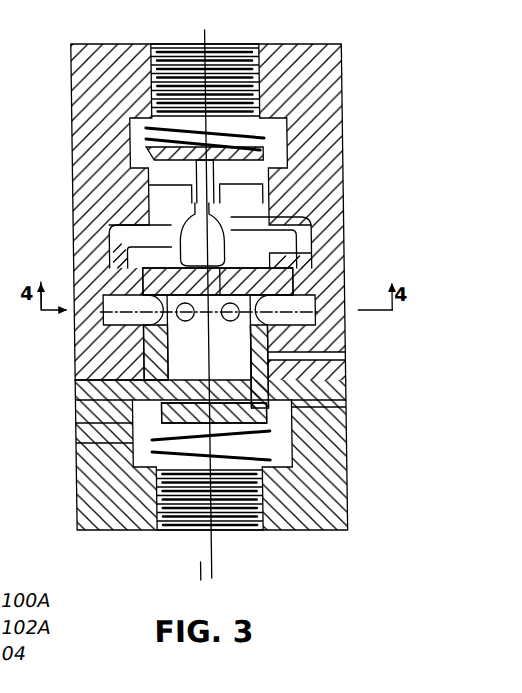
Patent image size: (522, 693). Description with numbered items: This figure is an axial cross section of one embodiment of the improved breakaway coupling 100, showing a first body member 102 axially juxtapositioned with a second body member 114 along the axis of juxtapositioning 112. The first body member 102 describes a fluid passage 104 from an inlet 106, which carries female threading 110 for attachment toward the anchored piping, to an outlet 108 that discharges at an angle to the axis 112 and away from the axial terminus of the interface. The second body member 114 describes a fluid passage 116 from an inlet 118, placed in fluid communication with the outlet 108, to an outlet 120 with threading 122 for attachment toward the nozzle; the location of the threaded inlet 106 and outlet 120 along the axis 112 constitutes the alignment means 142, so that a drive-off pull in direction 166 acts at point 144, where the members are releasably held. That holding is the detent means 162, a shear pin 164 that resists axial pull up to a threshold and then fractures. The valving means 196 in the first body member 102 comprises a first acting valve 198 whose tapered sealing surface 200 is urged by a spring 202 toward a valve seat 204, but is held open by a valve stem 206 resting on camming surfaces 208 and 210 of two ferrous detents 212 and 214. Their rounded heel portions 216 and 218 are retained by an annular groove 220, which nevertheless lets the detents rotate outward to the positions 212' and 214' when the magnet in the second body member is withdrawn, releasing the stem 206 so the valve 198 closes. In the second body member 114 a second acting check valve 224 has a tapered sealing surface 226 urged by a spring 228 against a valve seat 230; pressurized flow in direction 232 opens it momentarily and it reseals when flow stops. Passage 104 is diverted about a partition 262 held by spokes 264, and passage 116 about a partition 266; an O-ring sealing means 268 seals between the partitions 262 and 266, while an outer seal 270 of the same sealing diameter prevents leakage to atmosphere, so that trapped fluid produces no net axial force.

The valve assembly 100 is at (73, 32).
The first body member 102 is at (74, 60).
The fluid passage 104 is at (134, 130).
The inlet 106 is at (231, 44).
The outlet 108 is at (167, 322).
The threading 110 is at (152, 60).
The axis of juxtapositioning 112 is at (74, 422).
The second body member 114 is at (74, 478).
The fluid passage 116 is at (74, 447).
The inlet 118 is at (103, 320).
The outlet 120 is at (236, 531).
The threading 122 is at (135, 531).
The alignment means 142 is at (324, 20).
The point 144 is at (74, 396).
The detent means 162 is at (352, 358).
The shear pin 164 is at (333, 348).
The direction 166 is at (197, 572).
The valving means 196 is at (358, 178).
The first acting valve 198 is at (300, 118).
The tapered sealing surface 200 is at (289, 148).
The spring 202 is at (344, 60).
The valve seat 204 is at (100, 188).
The valve stem 206 is at (283, 162).
The camming surface 208 is at (205, 161).
The camming surface 210 is at (205, 175).
The detent 212 is at (124, 234).
The detent rotated position 212' is at (109, 201).
The detent 214 is at (280, 205).
The detent rotated position 214' is at (340, 194).
The rounded heel portion 216 is at (110, 244).
The rounded heel portion 218 is at (312, 236).
The annular groove 220 is at (312, 262).
The second acting check valve 224 is at (342, 409).
The tapered sealing surface 226 is at (340, 388).
The spring 228 is at (295, 437).
The valve seat 230 is at (194, 376).
The direction 232 is at (198, 360).
The partition 262 is at (344, 321).
The spokes 264 is at (344, 290).
The partition 266 is at (372, 273).
The sealing means 268 is at (131, 277).
The outer seal 270 is at (150, 340).